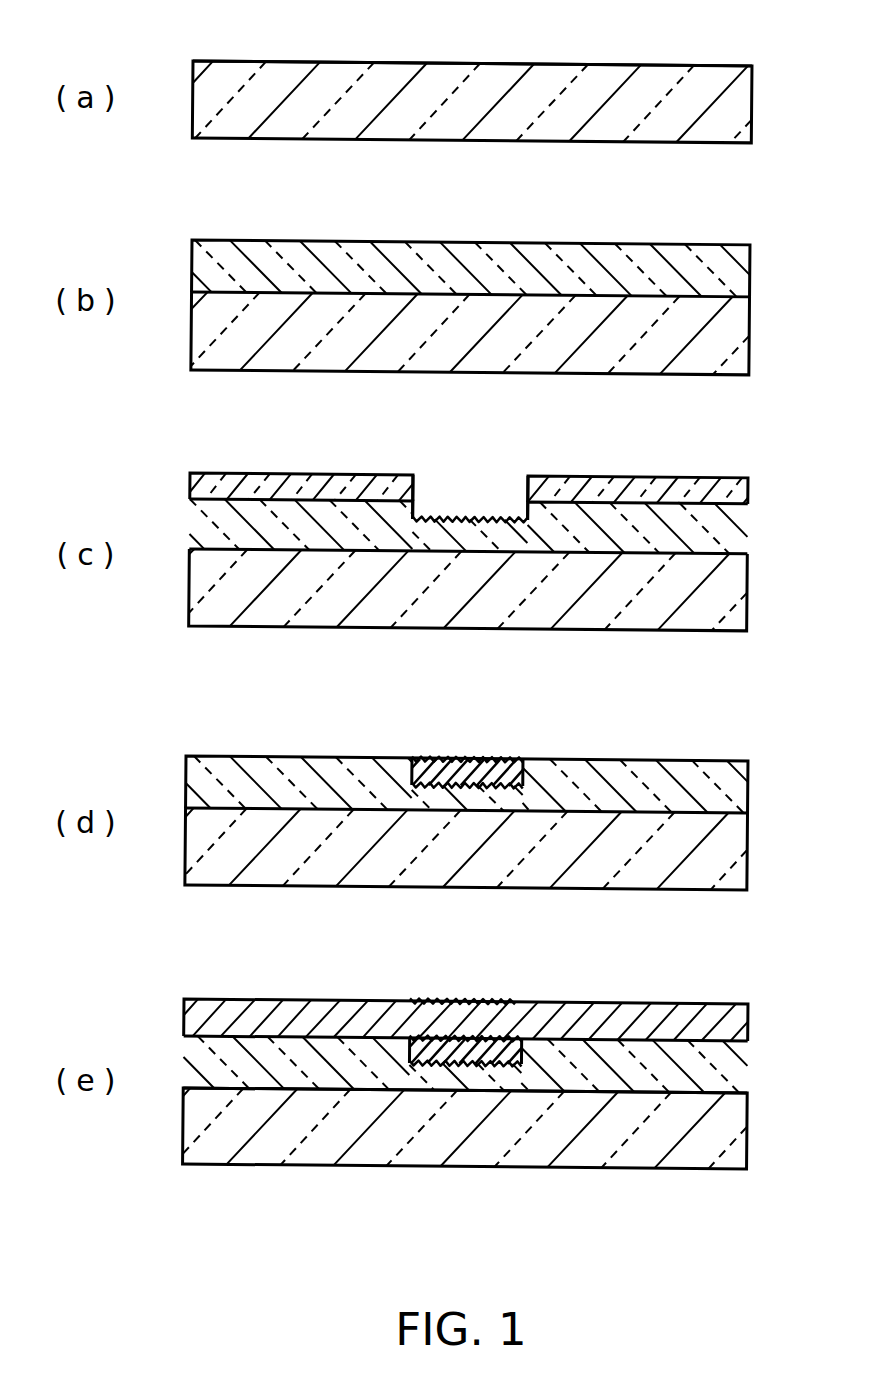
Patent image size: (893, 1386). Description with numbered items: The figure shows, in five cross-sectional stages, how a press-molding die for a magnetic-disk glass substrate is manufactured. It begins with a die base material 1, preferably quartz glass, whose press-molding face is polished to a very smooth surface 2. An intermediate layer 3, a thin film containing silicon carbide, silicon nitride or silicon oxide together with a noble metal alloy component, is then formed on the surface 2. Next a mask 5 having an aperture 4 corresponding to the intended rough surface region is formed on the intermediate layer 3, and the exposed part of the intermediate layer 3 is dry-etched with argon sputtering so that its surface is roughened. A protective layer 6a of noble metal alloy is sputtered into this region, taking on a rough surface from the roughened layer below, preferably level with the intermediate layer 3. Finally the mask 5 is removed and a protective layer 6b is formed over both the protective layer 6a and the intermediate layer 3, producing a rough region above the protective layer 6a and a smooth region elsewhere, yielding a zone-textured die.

The die base material 1 is at (744, 121).
The surface 2 is at (568, 62).
The intermediate layer 3 is at (733, 273).
The aperture 4 is at (475, 486).
The mask 5 is at (749, 489).
The protective layer 6a is at (478, 763).
The protective layer 6b is at (734, 1022).